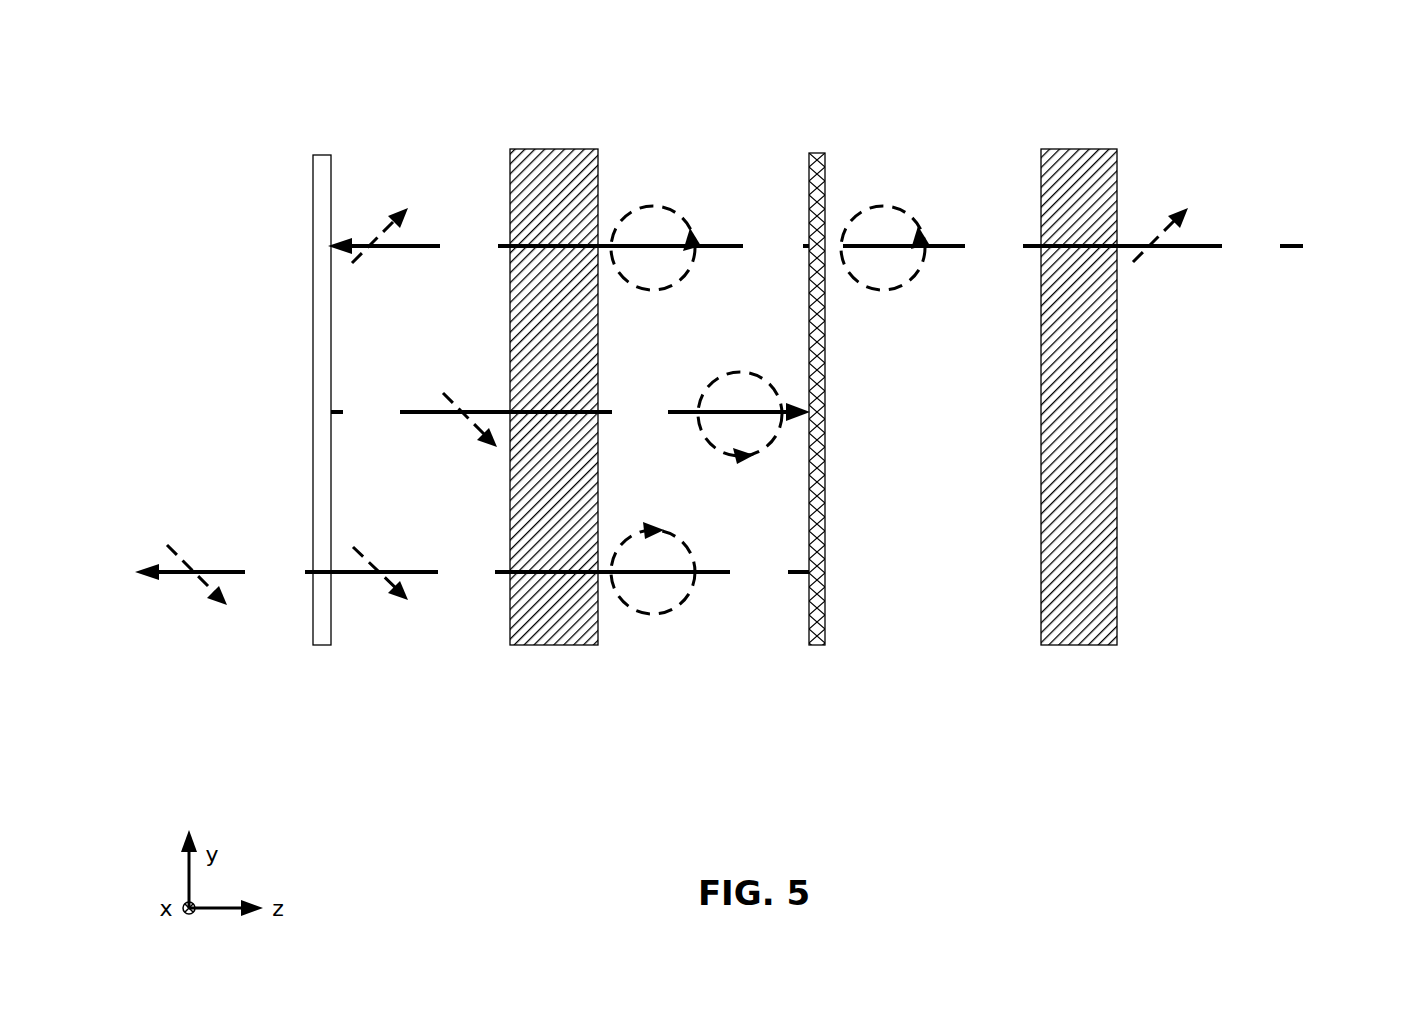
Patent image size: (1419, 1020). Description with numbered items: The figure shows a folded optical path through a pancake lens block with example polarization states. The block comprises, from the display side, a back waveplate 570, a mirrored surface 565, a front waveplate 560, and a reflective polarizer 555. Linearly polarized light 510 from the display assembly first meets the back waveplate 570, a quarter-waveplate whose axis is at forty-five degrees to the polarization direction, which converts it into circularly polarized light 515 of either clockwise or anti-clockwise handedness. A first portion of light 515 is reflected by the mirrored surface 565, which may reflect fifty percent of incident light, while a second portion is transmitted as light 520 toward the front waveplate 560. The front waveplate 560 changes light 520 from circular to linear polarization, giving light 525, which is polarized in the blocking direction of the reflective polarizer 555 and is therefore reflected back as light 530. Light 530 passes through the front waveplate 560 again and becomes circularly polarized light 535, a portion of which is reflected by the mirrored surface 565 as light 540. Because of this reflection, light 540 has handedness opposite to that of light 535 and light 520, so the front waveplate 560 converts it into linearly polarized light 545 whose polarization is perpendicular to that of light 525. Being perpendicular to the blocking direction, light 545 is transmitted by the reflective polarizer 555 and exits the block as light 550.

The linearly polarized light 510 is at (1212, 239).
The circularly polarized light 515 is at (926, 241).
The transmitted light portion 520 is at (704, 241).
The linearly polarized light 525 is at (464, 227).
The reflected light 530 is at (471, 410).
The circularly polarized light 535 is at (715, 410).
The reflected circularly polarized light 540 is at (652, 562).
The linearly polarized light 545 is at (396, 566).
The transmitted light 550 is at (214, 564).
The reflective polarizer 555 is at (312, 177).
The front waveplate 560 is at (542, 148).
The mirrored surface 565 is at (809, 198).
The back waveplate 570 is at (1067, 148).